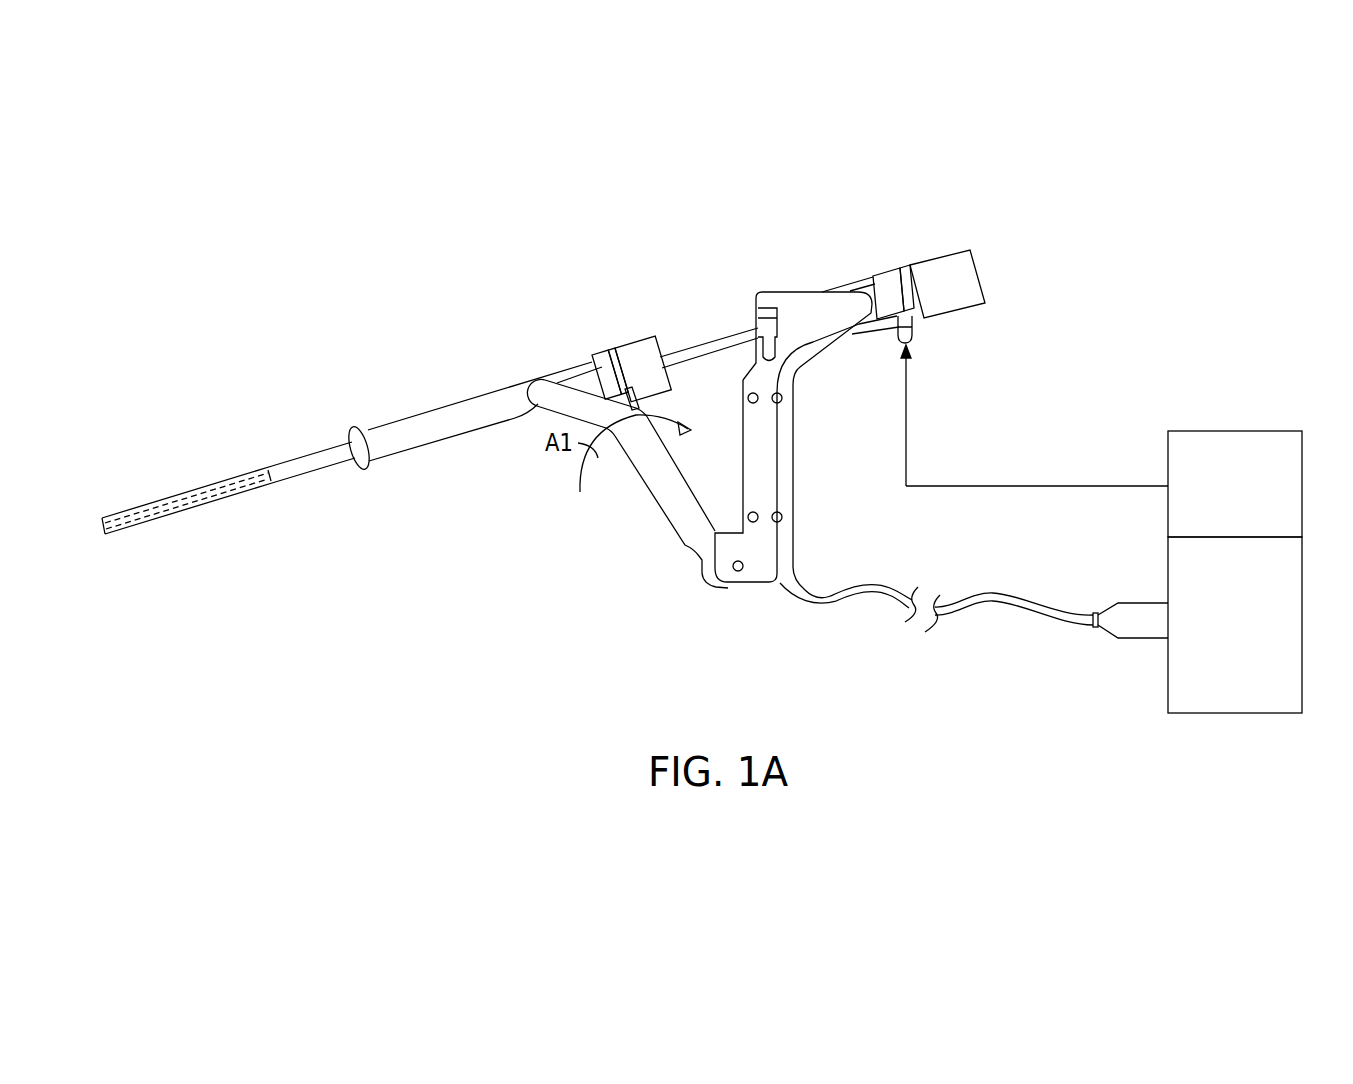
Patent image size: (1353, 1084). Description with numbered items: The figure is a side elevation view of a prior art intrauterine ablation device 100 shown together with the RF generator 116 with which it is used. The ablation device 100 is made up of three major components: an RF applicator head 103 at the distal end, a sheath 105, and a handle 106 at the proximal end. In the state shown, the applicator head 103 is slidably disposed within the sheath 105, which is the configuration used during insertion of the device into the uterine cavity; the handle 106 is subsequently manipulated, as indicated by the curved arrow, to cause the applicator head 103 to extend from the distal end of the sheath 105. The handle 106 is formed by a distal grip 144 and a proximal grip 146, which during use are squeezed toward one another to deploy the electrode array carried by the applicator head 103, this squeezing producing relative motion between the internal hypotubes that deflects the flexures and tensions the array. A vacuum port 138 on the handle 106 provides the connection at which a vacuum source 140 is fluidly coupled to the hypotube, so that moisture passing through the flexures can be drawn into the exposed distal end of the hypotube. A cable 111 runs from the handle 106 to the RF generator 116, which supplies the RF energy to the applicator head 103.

The intrauterine ablation device 100 is at (365, 310).
The RF applicator head 103 is at (138, 508).
The sheath 105 is at (298, 457).
The handle 106 is at (842, 241).
The cable / cord 111 is at (862, 580).
The RF generator 116 is at (1232, 713).
The vacuum port 138 is at (915, 330).
The vacuum source 140 is at (1242, 430).
The distal grip 144 is at (668, 514).
The proximal grip 146 is at (787, 412).